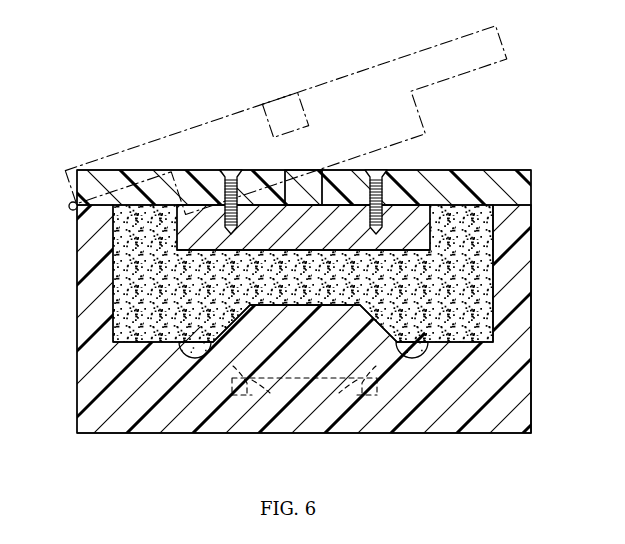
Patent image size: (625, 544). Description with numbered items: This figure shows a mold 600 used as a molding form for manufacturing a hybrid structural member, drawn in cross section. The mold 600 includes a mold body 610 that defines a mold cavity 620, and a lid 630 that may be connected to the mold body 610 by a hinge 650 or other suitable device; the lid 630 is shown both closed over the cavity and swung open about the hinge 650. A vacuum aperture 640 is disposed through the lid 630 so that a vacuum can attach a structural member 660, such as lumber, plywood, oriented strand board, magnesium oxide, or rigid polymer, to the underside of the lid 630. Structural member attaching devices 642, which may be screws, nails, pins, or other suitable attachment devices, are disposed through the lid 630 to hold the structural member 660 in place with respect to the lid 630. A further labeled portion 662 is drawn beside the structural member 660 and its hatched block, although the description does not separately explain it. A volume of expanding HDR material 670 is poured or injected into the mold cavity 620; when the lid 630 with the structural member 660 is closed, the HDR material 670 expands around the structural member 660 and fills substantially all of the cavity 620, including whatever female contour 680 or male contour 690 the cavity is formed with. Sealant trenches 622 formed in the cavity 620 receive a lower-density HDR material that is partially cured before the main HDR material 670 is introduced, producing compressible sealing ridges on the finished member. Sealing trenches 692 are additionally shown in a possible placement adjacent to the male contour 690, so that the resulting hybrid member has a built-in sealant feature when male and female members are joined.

The mold 600 is at (161, 109).
The mold body 610 is at (85, 365).
The mold cavity 620 is at (493, 266).
The sealant trenches 622 is at (193, 350).
The lid 630 is at (493, 178).
The vacuum aperture 640 is at (293, 188).
The structural member attaching devices 642 is at (231, 172).
The hinge 650 is at (70, 205).
The structural member 660 is at (272, 250).
The inner block 662 is at (463, 283).
The expanding HDR material 670 is at (115, 278).
The female contour 680 is at (337, 305).
The male contour 690 is at (297, 380).
The sealing trenches 692 is at (248, 396).